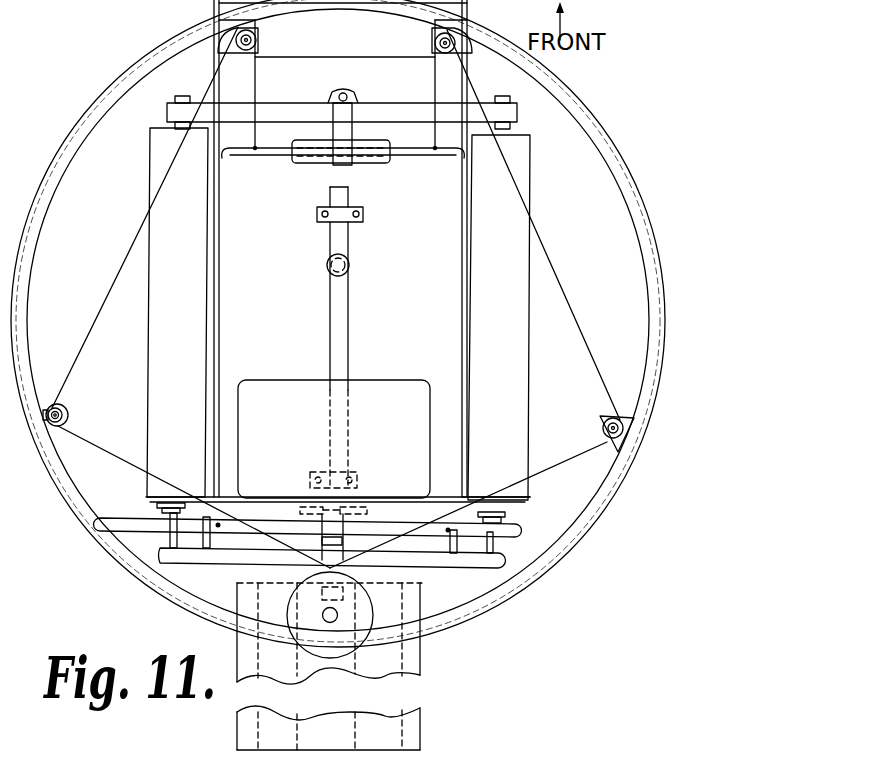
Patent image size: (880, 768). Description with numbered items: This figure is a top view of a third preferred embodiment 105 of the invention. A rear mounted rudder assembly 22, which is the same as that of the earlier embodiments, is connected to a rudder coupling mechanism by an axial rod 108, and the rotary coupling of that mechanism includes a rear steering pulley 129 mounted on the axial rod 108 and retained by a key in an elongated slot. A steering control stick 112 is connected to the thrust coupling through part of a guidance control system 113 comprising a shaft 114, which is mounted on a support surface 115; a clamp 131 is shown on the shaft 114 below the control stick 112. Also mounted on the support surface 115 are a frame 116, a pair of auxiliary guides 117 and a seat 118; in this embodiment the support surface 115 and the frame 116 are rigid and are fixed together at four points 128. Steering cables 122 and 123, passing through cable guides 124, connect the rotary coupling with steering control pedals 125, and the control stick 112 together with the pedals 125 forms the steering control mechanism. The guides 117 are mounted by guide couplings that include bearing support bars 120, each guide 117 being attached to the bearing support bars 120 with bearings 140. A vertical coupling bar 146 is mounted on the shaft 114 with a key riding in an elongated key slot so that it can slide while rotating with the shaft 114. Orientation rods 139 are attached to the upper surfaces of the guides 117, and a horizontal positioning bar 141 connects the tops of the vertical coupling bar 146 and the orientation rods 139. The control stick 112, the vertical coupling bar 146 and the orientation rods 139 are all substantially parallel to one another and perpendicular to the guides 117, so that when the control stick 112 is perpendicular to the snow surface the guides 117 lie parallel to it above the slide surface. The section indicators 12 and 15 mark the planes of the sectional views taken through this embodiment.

The section line 12- 12 is at (658, 85).
The section line 15- 15 is at (137, 172).
The rear mounted rudder assembly 22 is at (422, 668).
The third preferred embodiment 105 is at (661, 507).
The axial rod 108 is at (322, 614).
The steering control stick 112 is at (349, 262).
The guidance control system 113 is at (295, 276).
The shaft 114 is at (348, 305).
The support surface 115 is at (227, 310).
The frame 116 is at (107, 90).
The auxiliary guides 117 is at (147, 185).
The seat 118 is at (430, 425).
The bearing support bars 120 is at (478, 106).
The steering cable 122 is at (558, 280).
The steering cable 123 is at (130, 465).
The cable guides 124 is at (68, 415).
The steering control pedals 125 is at (238, 155).
The points 128 is at (236, 33).
The rear steering pulley 129 is at (333, 675).
The clamp 131 is at (363, 220).
The orientation rods 139 is at (505, 516).
The bearings 140 is at (172, 532).
The horizontal positioning bar 141 is at (520, 497).
The vertical coupling bar 146 is at (350, 500).